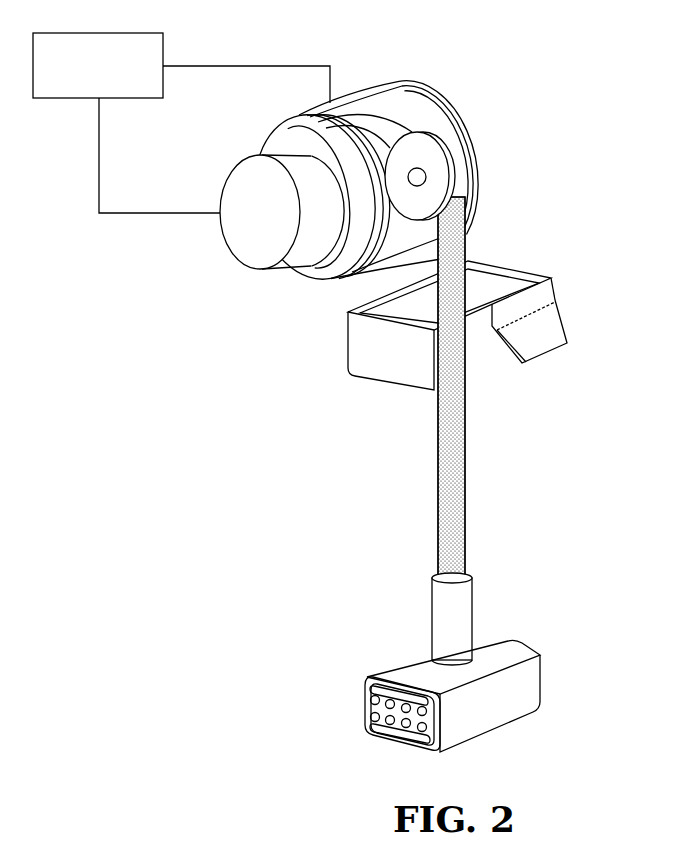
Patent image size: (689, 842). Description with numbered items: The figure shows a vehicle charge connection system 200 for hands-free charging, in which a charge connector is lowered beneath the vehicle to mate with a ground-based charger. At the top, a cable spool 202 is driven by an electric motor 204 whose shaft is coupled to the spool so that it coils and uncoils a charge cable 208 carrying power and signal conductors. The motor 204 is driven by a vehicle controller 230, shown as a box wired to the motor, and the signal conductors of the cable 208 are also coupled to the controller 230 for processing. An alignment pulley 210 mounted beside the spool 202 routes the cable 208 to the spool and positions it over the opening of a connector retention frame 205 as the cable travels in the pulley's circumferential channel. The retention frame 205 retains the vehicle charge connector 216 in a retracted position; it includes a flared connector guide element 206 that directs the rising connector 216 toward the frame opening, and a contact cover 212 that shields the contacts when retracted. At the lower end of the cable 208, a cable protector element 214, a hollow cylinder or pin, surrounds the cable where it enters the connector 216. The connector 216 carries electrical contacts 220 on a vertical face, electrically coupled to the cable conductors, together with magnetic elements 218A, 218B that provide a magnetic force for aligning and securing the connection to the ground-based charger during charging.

The vehicle charge connection system 200 is at (355, 402).
The cable spool 202 is at (290, 138).
The electric motor 204 is at (227, 233).
The connector retention frame 205 is at (510, 262).
The connector guide element 206 is at (537, 330).
The charge cable 208 is at (467, 428).
The alignment pulley 210 is at (417, 150).
The contact cover 212 is at (392, 348).
The cable protector element 214 is at (473, 607).
The vehicle charge connector 216 is at (427, 711).
The magnetic element 218A is at (387, 740).
The magnetic element 218B is at (388, 692).
The electrical contacts 220 is at (373, 717).
The vehicle controller 230 is at (163, 50).